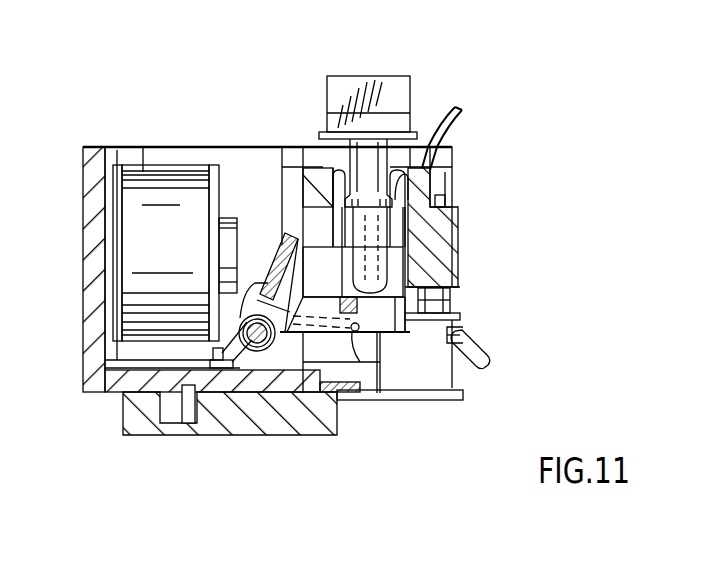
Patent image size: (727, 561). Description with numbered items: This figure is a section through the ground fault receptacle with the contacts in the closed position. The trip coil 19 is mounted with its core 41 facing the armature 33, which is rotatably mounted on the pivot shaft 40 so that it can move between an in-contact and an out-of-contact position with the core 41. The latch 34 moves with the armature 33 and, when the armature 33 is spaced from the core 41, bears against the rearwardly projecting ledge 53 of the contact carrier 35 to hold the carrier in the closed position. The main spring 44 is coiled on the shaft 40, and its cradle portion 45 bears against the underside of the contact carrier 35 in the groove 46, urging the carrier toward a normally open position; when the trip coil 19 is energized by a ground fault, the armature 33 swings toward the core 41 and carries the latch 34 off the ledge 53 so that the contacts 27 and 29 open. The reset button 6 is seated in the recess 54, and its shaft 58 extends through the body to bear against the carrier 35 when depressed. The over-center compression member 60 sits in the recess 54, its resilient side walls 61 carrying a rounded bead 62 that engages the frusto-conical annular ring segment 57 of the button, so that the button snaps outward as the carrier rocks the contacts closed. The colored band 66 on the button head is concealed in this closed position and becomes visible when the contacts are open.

The reset button 6 is at (410, 100).
The trip coil 19 is at (162, 183).
The contact 27 is at (462, 320).
The contact 29 is at (452, 298).
The armature 33 is at (270, 252).
The latch 34 is at (307, 395).
The contact carrier 35 is at (317, 303).
The pivot shaft 40 is at (260, 353).
The core 41 is at (267, 240).
The main spring 44 is at (285, 384).
The cradle portion 45 is at (323, 333).
The groove 46 is at (352, 336).
The projecting ledge 53 is at (245, 282).
The recess 54 is at (430, 222).
The annular ring segment 57 is at (405, 200).
The shaft 58 is at (378, 257).
The over-center compression member 60 is at (418, 190).
The side walls 61 is at (403, 228).
The rounded bead 62 is at (340, 195).
The colored band 66 is at (328, 115).